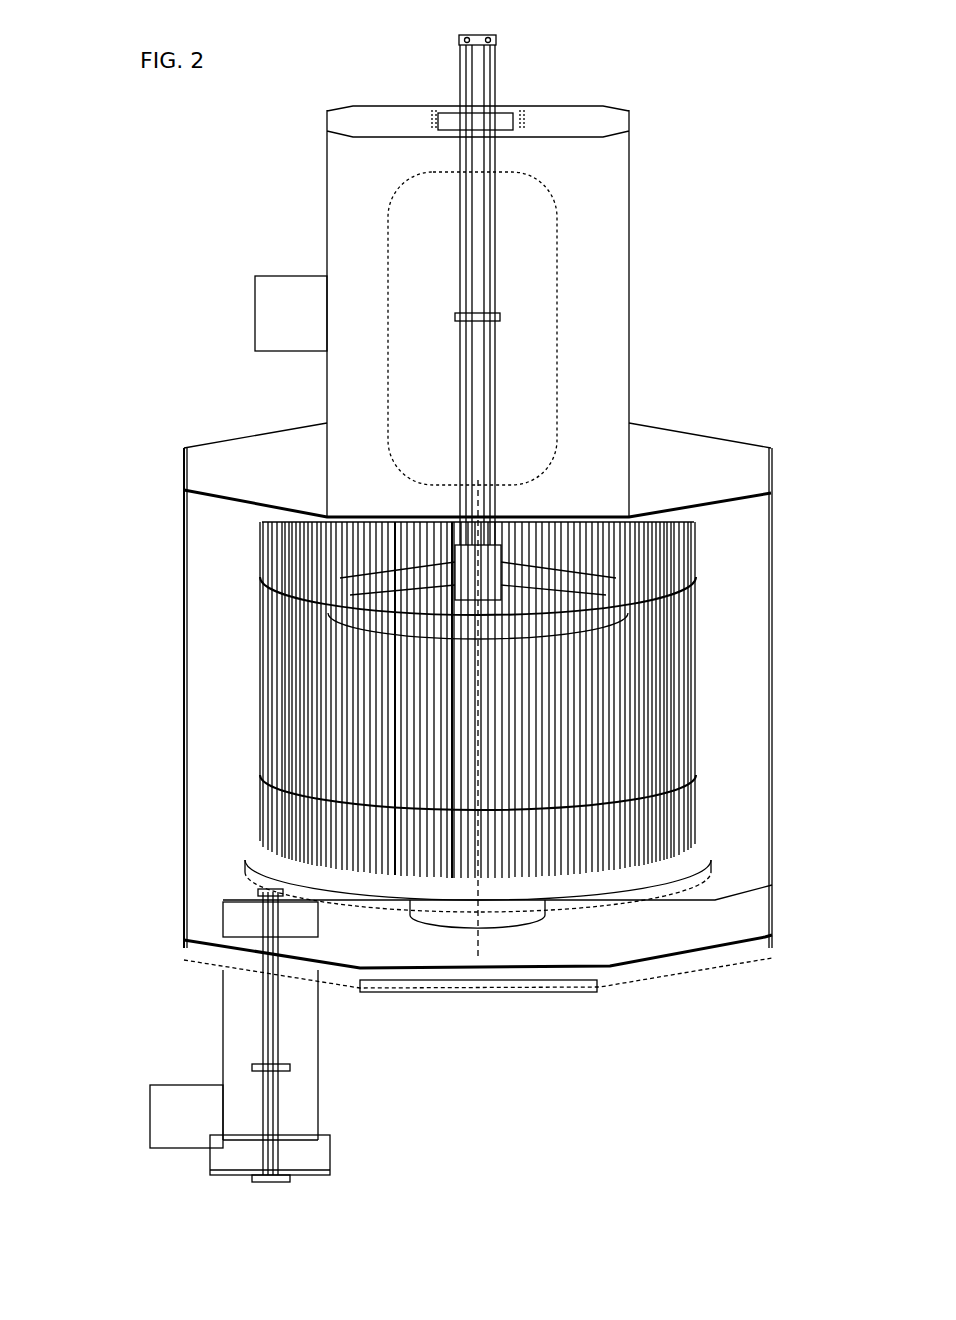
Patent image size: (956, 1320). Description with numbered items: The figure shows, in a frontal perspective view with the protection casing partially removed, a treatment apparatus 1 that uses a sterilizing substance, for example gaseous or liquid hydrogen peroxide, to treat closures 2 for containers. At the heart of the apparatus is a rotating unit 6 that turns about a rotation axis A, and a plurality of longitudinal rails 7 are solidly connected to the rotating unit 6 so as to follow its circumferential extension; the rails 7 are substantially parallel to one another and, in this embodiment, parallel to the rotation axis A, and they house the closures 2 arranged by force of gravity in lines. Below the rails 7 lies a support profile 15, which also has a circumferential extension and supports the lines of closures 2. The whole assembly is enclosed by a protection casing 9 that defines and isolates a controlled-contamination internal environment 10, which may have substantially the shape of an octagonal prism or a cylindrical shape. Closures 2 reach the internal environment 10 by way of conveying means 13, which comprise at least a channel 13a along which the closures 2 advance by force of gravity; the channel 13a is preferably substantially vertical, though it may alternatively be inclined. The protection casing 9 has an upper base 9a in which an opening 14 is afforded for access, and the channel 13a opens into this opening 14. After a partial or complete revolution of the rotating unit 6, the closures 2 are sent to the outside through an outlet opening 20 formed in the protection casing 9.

The treatment apparatus 1 is at (229, 241).
The closures 2 is at (552, 847).
The rotating unit 6 is at (483, 912).
The longitudinal rails 7 is at (395, 880).
The protection casing 9 is at (410, 707).
The upper base 9a is at (583, 128).
The controlled-contamination internal environment 10 is at (240, 700).
The conveying means 13 is at (496, 281).
The channel 13a is at (455, 75).
The opening 14 is at (497, 115).
The support profile 15 is at (628, 875).
The outlet opening 20 is at (248, 915).
The rotation axis A is at (475, 502).